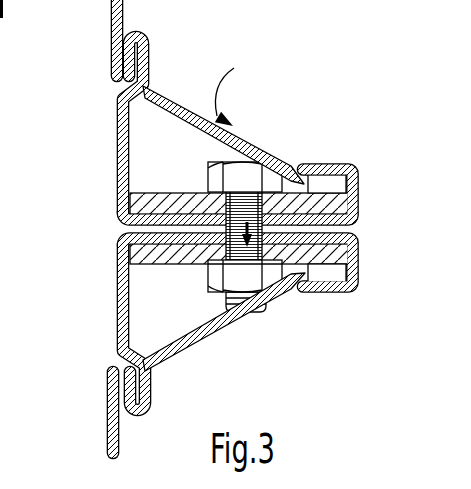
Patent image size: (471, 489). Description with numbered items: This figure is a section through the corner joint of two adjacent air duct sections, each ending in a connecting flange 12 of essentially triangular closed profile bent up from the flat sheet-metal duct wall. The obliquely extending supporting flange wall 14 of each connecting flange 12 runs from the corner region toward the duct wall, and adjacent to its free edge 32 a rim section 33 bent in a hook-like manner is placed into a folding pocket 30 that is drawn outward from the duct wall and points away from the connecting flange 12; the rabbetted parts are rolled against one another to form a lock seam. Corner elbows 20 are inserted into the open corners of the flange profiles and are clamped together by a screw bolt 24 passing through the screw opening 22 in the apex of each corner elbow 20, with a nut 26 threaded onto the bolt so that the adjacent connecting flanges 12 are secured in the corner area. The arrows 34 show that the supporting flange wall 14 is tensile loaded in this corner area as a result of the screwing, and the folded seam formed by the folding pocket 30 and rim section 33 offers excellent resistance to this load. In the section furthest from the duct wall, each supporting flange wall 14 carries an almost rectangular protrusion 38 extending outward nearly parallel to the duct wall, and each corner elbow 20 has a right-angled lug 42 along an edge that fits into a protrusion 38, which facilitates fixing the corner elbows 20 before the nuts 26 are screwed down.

The connecting flange 12 is at (112, 220).
The supporting flange wall 14 is at (167, 100).
The corner elbow 20 is at (140, 198).
The screw opening 22 is at (236, 306).
The screw bolt 24 is at (272, 170).
The nut 26 is at (273, 280).
The folding pocket 30 is at (125, 84).
The free edge 32 is at (124, 72).
The rim section 33 is at (127, 58).
The arrows 34 is at (256, 165).
The protrusion 38 is at (322, 172).
The lug 42 is at (330, 182).